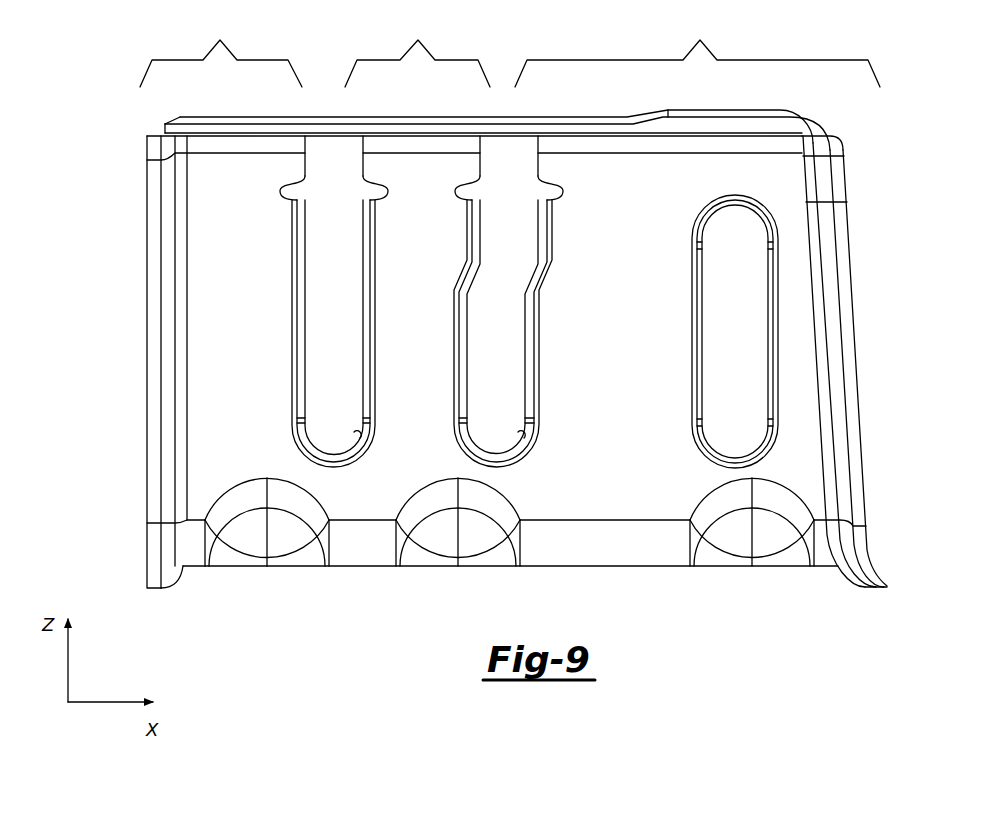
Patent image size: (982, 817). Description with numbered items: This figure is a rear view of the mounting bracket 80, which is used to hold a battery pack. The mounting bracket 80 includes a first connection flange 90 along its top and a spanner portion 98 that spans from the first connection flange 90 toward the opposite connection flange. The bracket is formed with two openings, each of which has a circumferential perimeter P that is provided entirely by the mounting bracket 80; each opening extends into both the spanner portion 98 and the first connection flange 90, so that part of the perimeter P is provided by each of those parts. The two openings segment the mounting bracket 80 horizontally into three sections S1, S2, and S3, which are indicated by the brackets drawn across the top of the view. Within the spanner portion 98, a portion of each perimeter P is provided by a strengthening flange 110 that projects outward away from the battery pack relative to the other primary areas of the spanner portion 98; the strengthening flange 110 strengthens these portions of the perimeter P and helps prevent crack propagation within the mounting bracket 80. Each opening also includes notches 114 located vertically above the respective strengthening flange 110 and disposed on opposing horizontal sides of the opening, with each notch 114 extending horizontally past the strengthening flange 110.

The mounting bracket 80 is at (133, 113).
The first connection flange 90 is at (320, 116).
The spanner portion 98 is at (210, 375).
The strengthening flange 110 is at (289, 402).
The notch 114 is at (278, 200).
The circumferential perimeter P is at (357, 436).
The first section S1 is at (697, 49).
The second section S2 is at (417, 49).
The third section S3 is at (221, 49).